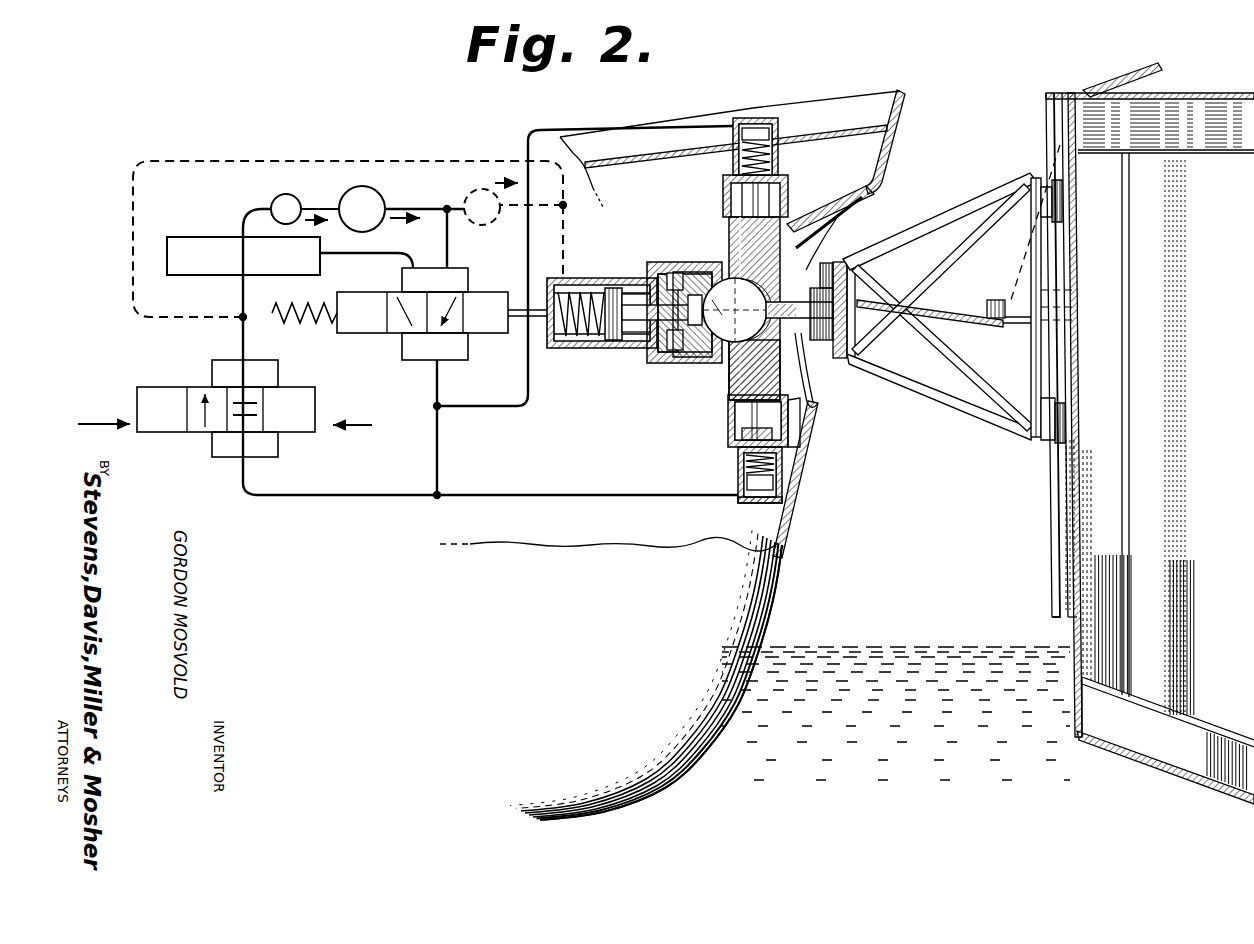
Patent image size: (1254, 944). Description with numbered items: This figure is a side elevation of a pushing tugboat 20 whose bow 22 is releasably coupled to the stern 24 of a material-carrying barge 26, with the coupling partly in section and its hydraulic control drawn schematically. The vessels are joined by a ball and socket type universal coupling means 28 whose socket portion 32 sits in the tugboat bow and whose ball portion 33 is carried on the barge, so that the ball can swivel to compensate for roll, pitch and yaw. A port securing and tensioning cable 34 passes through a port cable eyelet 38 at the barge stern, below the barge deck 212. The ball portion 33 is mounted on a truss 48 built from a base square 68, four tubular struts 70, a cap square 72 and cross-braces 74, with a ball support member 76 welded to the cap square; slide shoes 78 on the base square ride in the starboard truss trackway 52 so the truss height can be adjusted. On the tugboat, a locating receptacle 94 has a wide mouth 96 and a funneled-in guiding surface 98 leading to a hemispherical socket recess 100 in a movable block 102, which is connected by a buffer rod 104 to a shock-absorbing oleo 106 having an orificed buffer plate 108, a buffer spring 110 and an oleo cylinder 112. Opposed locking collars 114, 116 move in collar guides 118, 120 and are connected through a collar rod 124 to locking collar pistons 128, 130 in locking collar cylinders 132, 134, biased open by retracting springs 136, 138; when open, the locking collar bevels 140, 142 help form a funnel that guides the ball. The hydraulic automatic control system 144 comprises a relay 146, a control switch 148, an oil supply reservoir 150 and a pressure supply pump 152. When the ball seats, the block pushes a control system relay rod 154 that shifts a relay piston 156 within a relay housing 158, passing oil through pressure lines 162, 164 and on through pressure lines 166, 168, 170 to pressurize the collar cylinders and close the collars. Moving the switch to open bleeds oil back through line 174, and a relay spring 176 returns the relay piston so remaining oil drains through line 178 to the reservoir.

The pushing tugboat 20 is at (742, 628).
The bow 22 is at (788, 553).
The stern 24 is at (1070, 575).
The material-carrying barge 26 is at (1074, 708).
The ball and socket type universal coupling means 28 is at (772, 306).
The socket portion 32 is at (725, 288).
The ball portion 33 is at (706, 284).
The port securing and tensioning cable 34 is at (950, 305).
The port cable eyelet 38 is at (1003, 323).
The truss 48 is at (978, 295).
The starboard truss trackway 52 is at (1055, 497).
The base square 68 is at (1031, 272).
The tubular struts 70 is at (960, 215).
The cap square 72 is at (841, 367).
The cross-braces 74 is at (920, 290).
The ball support member 76 is at (809, 348).
The slide shoes 78 is at (1065, 197).
The locating receptacle 94 is at (813, 408).
The wide mouth 96 is at (820, 238).
The funneled-in guiding surface 98 is at (852, 198).
The hemispherical socket recess 100 is at (700, 363).
The movable block 102 is at (668, 363).
The buffer rod 104 is at (636, 303).
The shock-absorbing oleo 106 is at (650, 362).
The orificed buffer plate 108 is at (608, 343).
The buffer spring 110 is at (562, 349).
The oleo cylinder 112 is at (580, 278).
The locking collar 114 is at (735, 233).
The locking collar 116 is at (735, 406).
The collar guide 118 is at (790, 195).
The collar guide 120 is at (810, 432).
The collar rod 124 is at (742, 432).
The locking collar piston 128 is at (778, 136).
The locking collar piston 130 is at (744, 479).
The locking collar cylinder 132 is at (748, 117).
The locking collar cylinder 134 is at (748, 504).
The retracting spring 136 is at (738, 160).
The retracting spring 138 is at (744, 455).
The locking collar bevel 140 is at (792, 228).
The locking collar bevel 142 is at (766, 360).
The hydraulic automatic control system 144 is at (239, 160).
The relay 146 is at (396, 339).
The control switch 148 is at (283, 379).
The oil supply reservoir 150 is at (209, 235).
The pressure supply pump 152 is at (296, 182).
The control system relay rod 154 is at (508, 326).
The relay piston 156 is at (490, 292).
The relay housing 158 is at (465, 267).
The pressure line 162 is at (407, 199).
The pressure line 164 is at (447, 240).
The pressure line 166 is at (437, 432).
The pressure line 168 is at (472, 407).
The pressure line 170 is at (463, 498).
The line 174 is at (242, 296).
The relay spring 176 is at (300, 300).
The line 178 is at (379, 257).
The deck 212 is at (1190, 95).